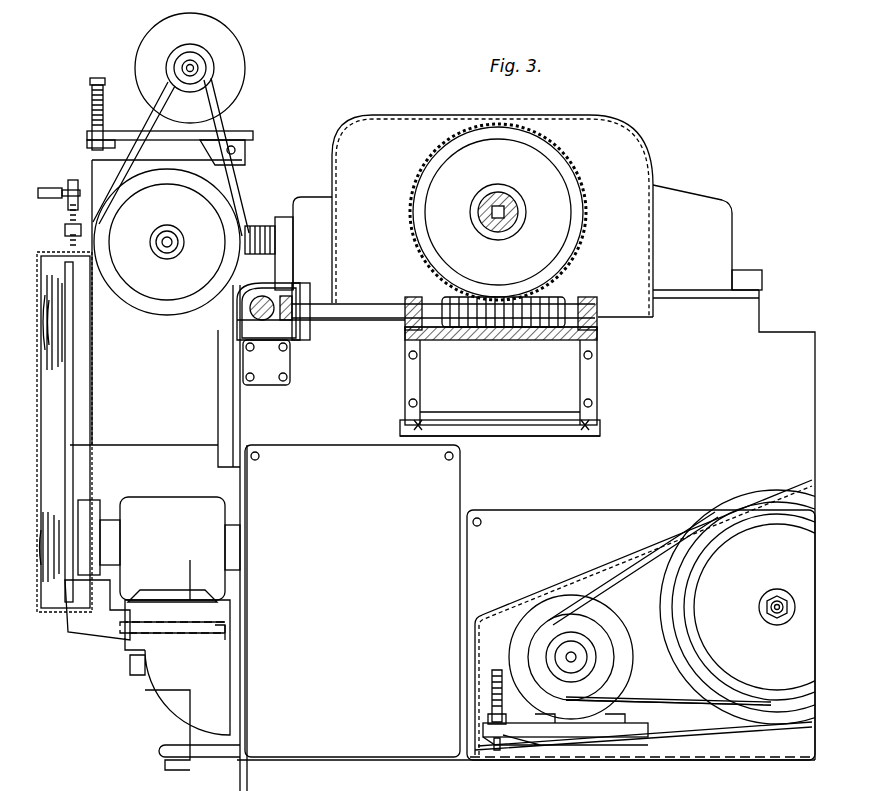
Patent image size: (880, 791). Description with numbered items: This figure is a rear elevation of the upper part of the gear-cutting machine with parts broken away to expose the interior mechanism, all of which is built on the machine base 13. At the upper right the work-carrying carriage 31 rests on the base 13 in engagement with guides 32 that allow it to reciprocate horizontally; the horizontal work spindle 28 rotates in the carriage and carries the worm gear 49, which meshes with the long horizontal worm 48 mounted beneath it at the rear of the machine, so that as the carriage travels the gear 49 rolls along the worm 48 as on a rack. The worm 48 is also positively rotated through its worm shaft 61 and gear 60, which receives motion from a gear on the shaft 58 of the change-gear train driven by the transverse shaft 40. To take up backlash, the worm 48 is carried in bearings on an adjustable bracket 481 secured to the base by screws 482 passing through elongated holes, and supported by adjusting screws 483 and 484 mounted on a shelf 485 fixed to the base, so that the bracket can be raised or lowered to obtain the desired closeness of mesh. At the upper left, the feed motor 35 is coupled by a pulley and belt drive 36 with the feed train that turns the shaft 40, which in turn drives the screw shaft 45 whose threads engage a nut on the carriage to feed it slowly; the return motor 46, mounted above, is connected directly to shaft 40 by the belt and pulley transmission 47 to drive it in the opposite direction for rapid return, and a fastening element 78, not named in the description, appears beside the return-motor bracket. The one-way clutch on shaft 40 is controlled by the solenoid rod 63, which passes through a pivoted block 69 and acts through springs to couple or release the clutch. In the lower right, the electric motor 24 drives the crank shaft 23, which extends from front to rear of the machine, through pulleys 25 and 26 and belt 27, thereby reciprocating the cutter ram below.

The machine base 13 is at (775, 355).
The shaft 23 is at (778, 595).
The electric motor 24 is at (540, 595).
The pulley 25 is at (584, 625).
The pulley 26 is at (690, 662).
The belt 27 is at (618, 545).
The work spindle 28 is at (505, 200).
The carriage 31 is at (708, 205).
The guides 32 is at (752, 272).
The feed motor 35 is at (136, 496).
The pulley and belt drive 36 is at (70, 395).
The transverse shaft 40 is at (170, 252).
The screw shaft 45 is at (256, 225).
The return motor 46 is at (226, 48).
The belt and pulley transmission 47 is at (216, 108).
The worm 48 is at (558, 297).
The worm gear 49 is at (424, 252).
The shaft 58 is at (252, 307).
The gear 60 is at (300, 335).
The worm shaft 61 is at (360, 304).
The rod 63 is at (66, 240).
The block 69 is at (68, 226).
The bolt 78 is at (58, 190).
The adjustable bracket 481 is at (560, 372).
The screws 482 is at (598, 402).
The adjusting screws 483 is at (603, 418).
The adjusting screws 484 is at (580, 430).
The shelf 485 is at (538, 436).